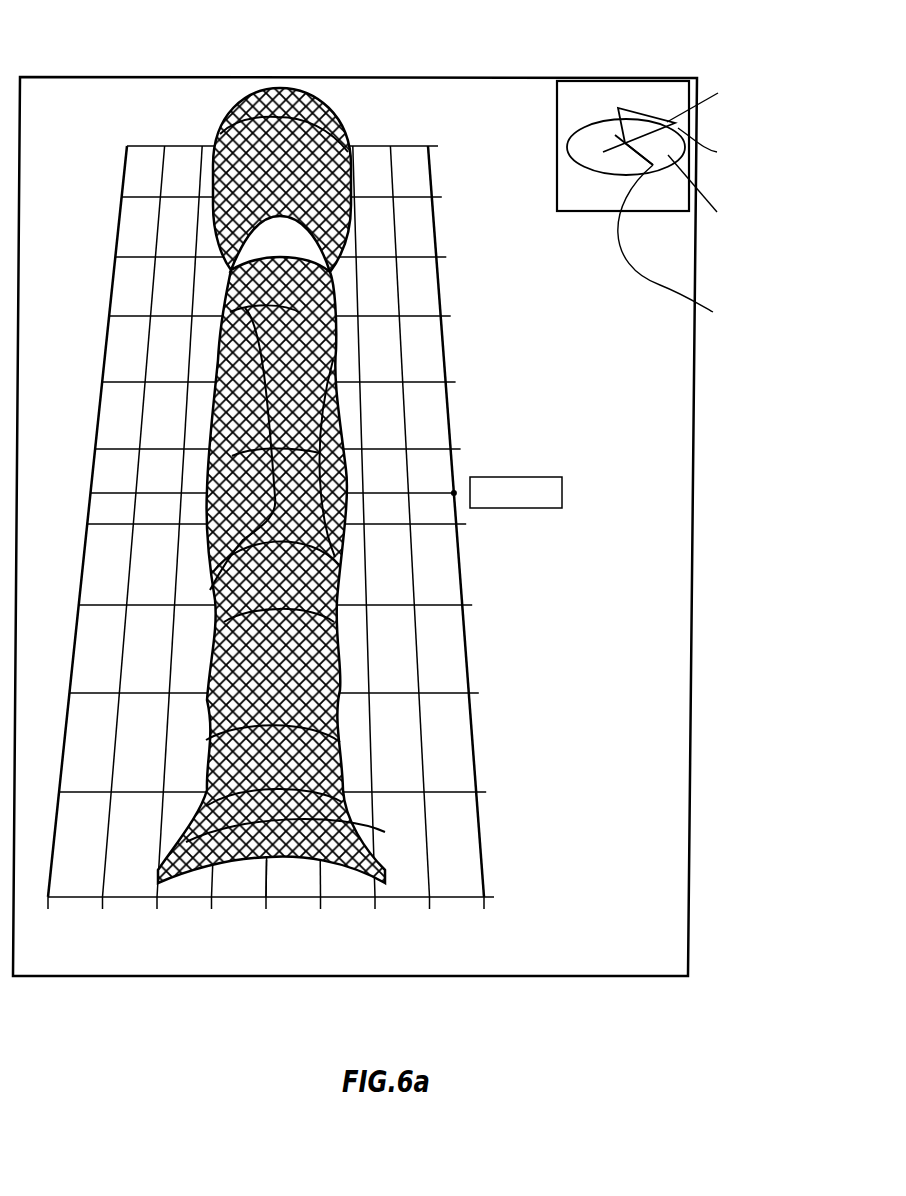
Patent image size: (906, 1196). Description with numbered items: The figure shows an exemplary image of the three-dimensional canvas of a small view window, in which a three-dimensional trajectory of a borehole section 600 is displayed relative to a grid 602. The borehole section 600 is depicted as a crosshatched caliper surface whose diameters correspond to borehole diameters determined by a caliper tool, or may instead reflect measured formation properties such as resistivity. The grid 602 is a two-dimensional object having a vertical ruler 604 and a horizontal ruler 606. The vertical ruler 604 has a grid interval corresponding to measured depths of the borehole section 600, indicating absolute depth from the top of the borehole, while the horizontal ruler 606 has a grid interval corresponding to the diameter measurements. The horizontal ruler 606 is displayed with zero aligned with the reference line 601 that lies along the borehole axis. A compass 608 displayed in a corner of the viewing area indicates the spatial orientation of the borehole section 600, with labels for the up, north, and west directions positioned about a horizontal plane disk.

The borehole section 600 is at (266, 98).
The reference line 601 is at (268, 875).
The grid 602 is at (117, 225).
The vertical ruler 604 is at (475, 748).
The horizontal ruler 606 is at (128, 897).
The compass 608 is at (618, 110).